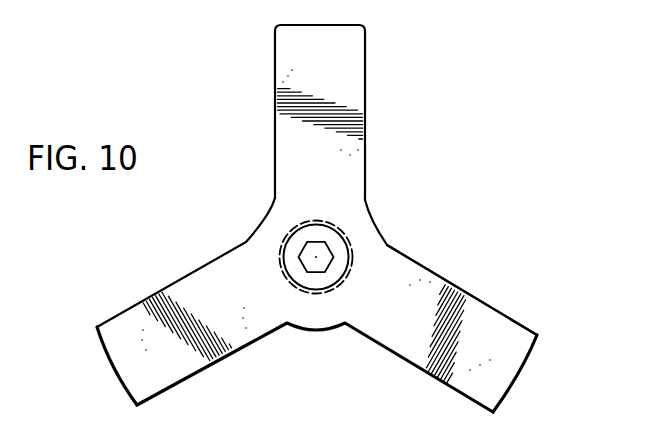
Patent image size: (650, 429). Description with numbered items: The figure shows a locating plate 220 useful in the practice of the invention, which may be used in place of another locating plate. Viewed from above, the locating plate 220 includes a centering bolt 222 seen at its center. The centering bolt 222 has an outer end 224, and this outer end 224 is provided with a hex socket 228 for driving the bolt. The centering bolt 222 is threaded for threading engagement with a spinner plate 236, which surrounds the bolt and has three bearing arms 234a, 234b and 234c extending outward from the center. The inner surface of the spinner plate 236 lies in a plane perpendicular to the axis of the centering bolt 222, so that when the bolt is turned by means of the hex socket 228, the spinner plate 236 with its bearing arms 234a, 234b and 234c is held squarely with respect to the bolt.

The locating plate 220 is at (390, 122).
The centering bolt 222 is at (337, 233).
The outer end 224 is at (322, 283).
The hex socket 228 is at (320, 258).
The bearing arm 234a is at (276, 104).
The bearing arm 234b is at (433, 377).
The bearing arm 234c is at (161, 292).
The spinner plate 236 is at (550, 269).